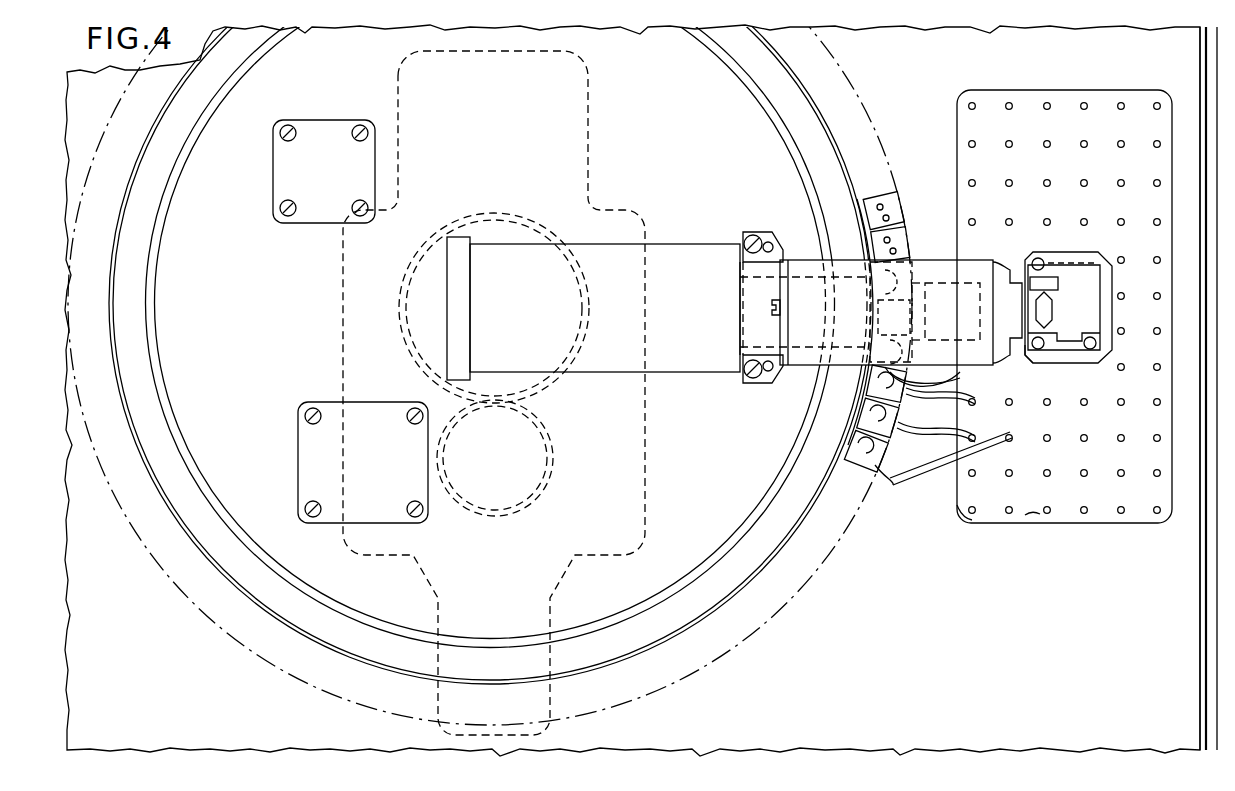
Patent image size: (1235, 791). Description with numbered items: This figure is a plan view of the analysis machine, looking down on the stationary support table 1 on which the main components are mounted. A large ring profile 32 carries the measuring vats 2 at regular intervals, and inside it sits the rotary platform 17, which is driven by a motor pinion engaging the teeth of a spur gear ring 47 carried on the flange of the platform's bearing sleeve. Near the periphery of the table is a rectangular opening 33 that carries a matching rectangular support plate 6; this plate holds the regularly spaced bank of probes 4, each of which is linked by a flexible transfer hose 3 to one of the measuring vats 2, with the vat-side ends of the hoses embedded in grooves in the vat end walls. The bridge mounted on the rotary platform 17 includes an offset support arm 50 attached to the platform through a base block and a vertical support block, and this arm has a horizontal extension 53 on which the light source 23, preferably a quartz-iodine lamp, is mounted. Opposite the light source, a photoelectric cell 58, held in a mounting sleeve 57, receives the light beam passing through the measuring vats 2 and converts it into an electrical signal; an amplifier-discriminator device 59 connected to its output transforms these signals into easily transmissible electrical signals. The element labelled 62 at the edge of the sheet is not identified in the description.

The stationary support table 1 is at (632, 390).
The measuring vats 2 is at (882, 193).
The flexible transfer hoses 3 is at (907, 427).
The probes 4 is at (958, 515).
The support plate 6 is at (1088, 495).
The rotary platform 17 is at (442, 393).
The light source 23 is at (1077, 302).
The ring profile 32 is at (695, 607).
The opening 33 is at (1033, 512).
The spur gear ring 47 is at (412, 368).
The offset support arm 50 is at (936, 272).
The horizontal extension 53 is at (1047, 358).
The mounting sleeve 57 is at (758, 290).
The photoelectric cell 58 is at (682, 268).
The amplifier-discriminator device 59 is at (458, 258).
The rail 62 is at (1200, 535).